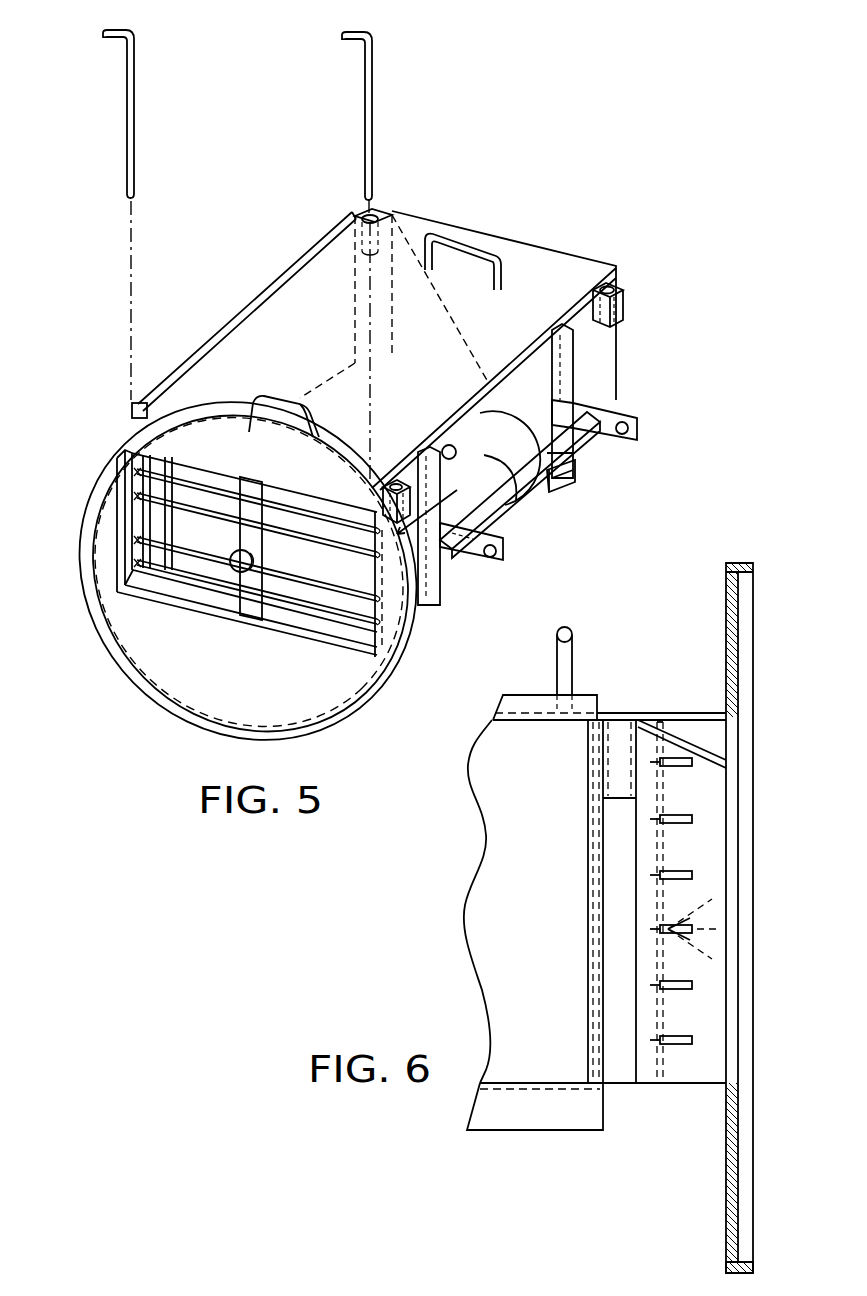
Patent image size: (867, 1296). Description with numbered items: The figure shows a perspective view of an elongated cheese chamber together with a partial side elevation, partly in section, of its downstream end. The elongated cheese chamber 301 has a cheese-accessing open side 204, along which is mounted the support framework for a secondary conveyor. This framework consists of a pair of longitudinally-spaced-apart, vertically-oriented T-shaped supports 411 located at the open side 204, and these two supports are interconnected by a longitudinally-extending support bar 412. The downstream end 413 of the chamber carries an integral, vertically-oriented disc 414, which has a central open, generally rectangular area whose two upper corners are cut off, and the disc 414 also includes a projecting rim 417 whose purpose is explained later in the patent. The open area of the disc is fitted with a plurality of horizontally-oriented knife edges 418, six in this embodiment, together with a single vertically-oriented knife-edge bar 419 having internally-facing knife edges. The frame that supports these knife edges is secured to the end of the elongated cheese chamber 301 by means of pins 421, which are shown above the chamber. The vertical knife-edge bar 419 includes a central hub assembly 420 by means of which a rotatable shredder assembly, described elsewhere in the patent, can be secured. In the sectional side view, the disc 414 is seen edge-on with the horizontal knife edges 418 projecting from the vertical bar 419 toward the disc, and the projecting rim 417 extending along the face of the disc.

In FIG. 5, the pin 421 is at (133, 128).
In FIG. 5, the downstream end 413 is at (207, 567).
In FIG. 5, the disc 414 is at (177, 437).
In FIG. 6, the disc 414 is at (737, 648).
In FIG. 5, the central hub assembly 420 is at (236, 566).
In FIG. 5, the knife-edge bar 419 is at (255, 612).
In FIG. 6, the knife-edge bar 419 is at (657, 842).
In FIG. 5, the T-shaped support 411 is at (578, 397).
In FIG. 5, the elongated cheese chamber 301 is at (578, 422).
In FIG. 5, the support bar 412 is at (553, 478).
In FIG. 5, the cheese-accessing open side 204 is at (518, 505).
In FIG. 6, the knife edge 418 is at (693, 758).
In FIG. 6, the projecting rim 417 is at (753, 1268).